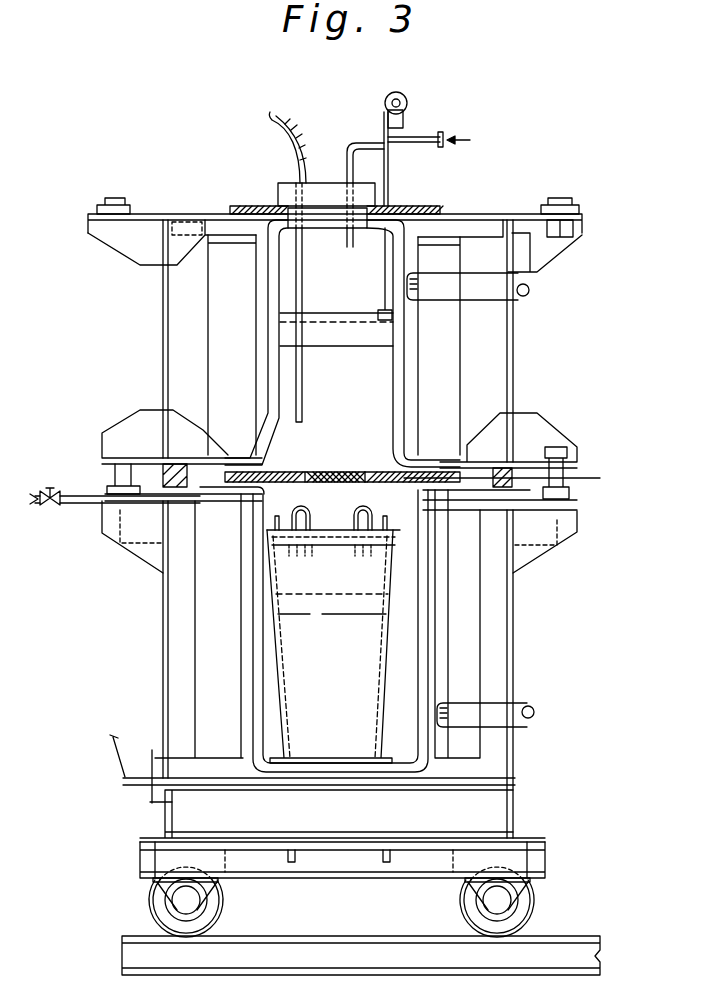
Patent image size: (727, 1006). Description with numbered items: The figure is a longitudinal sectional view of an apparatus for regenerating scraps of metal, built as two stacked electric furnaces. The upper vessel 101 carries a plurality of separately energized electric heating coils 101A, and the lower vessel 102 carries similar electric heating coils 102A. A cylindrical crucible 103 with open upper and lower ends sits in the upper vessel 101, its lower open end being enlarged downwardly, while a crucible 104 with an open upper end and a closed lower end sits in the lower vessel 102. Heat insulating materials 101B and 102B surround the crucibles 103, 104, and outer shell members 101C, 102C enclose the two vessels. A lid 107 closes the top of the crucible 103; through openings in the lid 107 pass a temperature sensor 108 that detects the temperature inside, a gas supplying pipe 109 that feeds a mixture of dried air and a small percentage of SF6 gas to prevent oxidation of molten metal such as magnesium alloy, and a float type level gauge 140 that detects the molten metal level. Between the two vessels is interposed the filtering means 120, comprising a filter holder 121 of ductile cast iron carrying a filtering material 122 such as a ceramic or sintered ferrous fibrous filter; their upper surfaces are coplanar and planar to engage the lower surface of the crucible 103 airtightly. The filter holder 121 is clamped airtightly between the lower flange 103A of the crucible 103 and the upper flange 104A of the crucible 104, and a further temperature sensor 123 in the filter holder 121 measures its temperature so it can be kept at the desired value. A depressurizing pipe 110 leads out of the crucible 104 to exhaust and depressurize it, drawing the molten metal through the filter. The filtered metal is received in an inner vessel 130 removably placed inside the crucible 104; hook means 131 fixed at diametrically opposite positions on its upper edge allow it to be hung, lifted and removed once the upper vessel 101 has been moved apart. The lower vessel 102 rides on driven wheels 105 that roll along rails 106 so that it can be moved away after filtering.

The upper vessel 101 is at (516, 363).
The electric heating coils 101A is at (531, 290).
The heat insulating material 101B is at (222, 368).
The outer shell member 101C is at (163, 300).
The crucible 103 is at (408, 216).
The lower flange of the crucible 103A is at (225, 465).
The crucible 104 is at (418, 690).
The upper flange of the crucible 104A is at (160, 478).
The lid 107 is at (330, 183).
The temperature sensor 108 is at (304, 366).
The gas supplying pipe 109 is at (351, 247).
The float type level gauge 140 is at (385, 310).
The filtering means 120 is at (384, 470).
The filter holder 121 is at (285, 483).
The filtering material 122 is at (336, 470).
The temperature sensor 123 is at (393, 493).
The depressurizing pipe 110 is at (78, 506).
The inner vessel 130 is at (363, 656).
The hook means 131 is at (352, 532).
The lower vessel 102 is at (516, 764).
The electric heating coils 102A is at (534, 712).
The heat insulating material 102B is at (203, 662).
The outer shell member 102C is at (165, 715).
The wheels 105 is at (538, 900).
The rails 106 is at (595, 955).